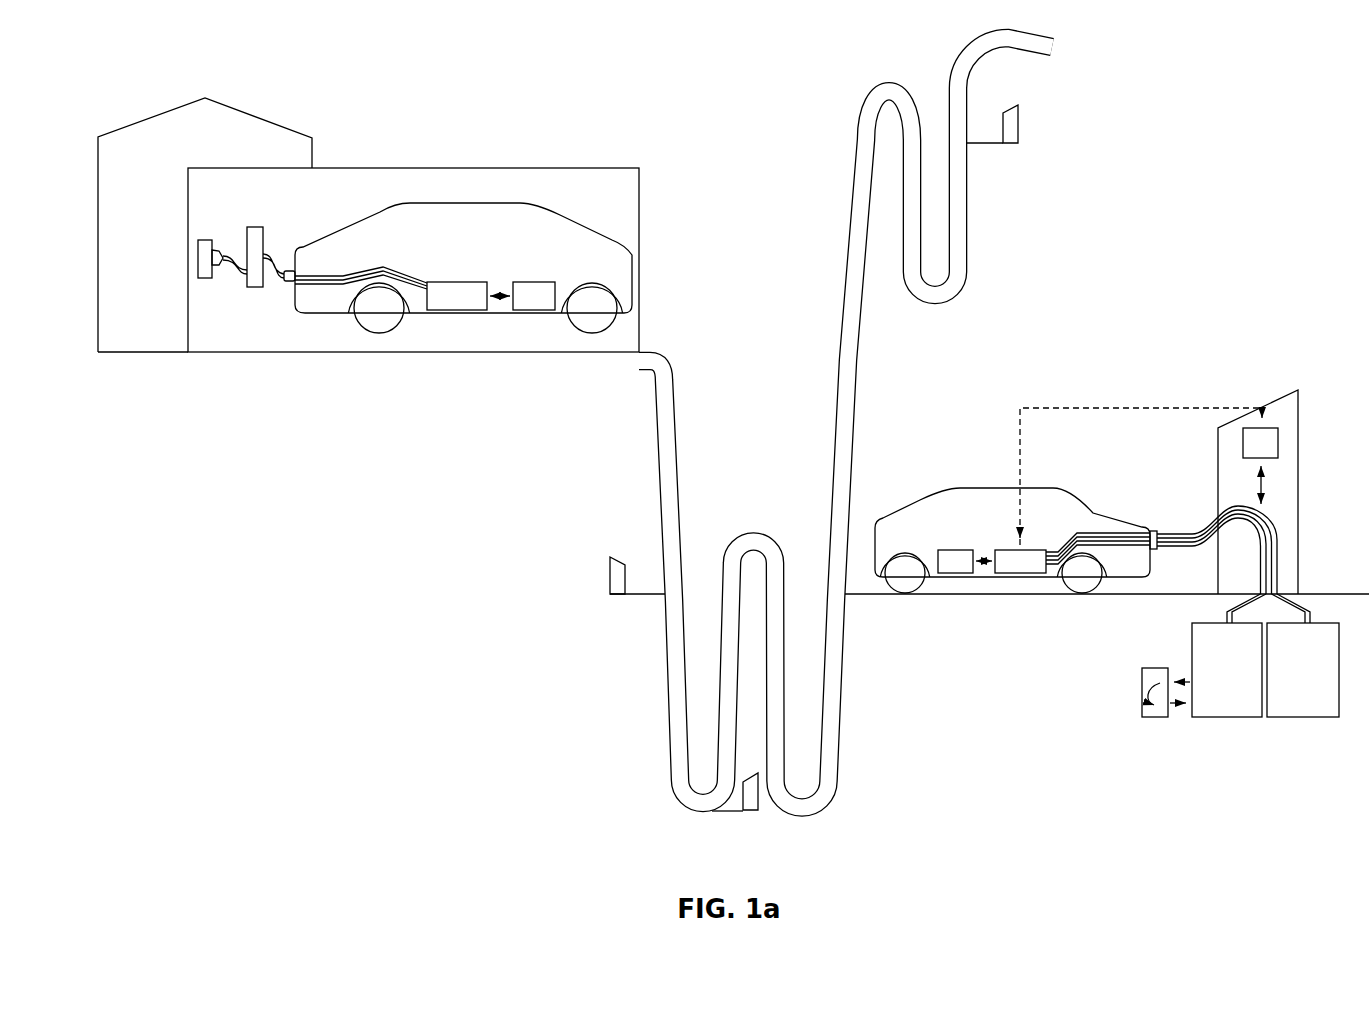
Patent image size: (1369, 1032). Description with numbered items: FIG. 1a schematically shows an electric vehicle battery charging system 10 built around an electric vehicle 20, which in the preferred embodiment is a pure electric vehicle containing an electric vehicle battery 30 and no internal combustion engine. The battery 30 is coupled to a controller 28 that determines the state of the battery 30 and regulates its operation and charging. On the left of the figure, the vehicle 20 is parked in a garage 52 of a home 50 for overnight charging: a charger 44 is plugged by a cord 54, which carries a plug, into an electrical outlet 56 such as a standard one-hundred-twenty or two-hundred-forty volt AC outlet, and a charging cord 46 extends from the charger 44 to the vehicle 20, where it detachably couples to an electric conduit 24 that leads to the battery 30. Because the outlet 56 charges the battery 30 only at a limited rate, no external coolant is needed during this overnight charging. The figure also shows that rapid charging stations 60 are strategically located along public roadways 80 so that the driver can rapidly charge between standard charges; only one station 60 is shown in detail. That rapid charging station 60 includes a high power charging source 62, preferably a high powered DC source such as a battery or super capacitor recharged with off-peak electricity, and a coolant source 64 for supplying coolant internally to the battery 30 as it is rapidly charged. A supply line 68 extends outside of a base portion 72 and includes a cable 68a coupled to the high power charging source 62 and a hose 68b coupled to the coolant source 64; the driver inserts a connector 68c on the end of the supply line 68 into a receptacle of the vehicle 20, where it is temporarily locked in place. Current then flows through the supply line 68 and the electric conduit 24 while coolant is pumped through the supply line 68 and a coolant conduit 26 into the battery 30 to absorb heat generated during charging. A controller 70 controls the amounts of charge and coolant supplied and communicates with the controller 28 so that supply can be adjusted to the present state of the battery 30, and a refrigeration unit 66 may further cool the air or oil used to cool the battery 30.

The electric vehicle battery charging system 10 is at (170, 76).
The electric vehicle 20 is at (604, 240).
The electric conduit 24 is at (395, 271).
The coolant conduit 26 is at (320, 288).
The controller 28 is at (528, 281).
The electric vehicle battery 30 is at (458, 281).
The charger 44 is at (255, 227).
The charging cord 46 is at (280, 258).
The home 50 is at (299, 131).
The garage 52 is at (588, 168).
The cord 54 is at (232, 271).
The electrical outlet 56 is at (196, 258).
The rapid charging station 60 is at (1028, 108).
The high power charging source 62 is at (1303, 670).
The coolant source 64 is at (1216, 670).
The refrigeration unit 66 is at (1142, 693).
The supply line 68 is at (1170, 533).
The cable 68a is at (1211, 512).
The hose 68b is at (1185, 550).
The connector 68c is at (1149, 523).
The controller 70 is at (1282, 443).
The base portion 72 is at (1302, 513).
The public roadway 80 is at (685, 440).